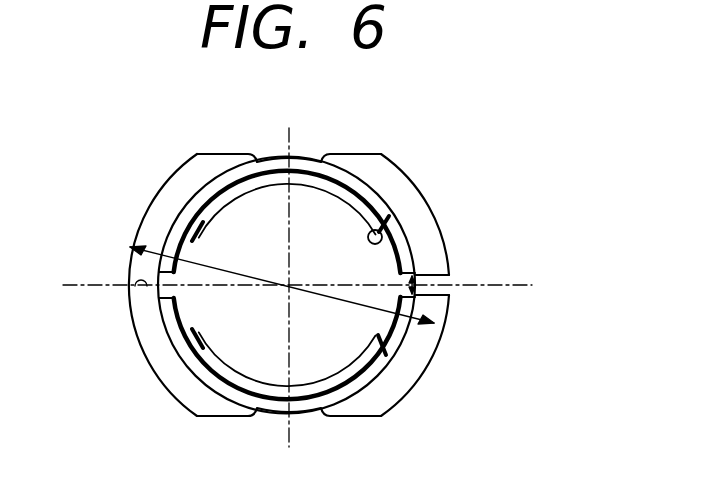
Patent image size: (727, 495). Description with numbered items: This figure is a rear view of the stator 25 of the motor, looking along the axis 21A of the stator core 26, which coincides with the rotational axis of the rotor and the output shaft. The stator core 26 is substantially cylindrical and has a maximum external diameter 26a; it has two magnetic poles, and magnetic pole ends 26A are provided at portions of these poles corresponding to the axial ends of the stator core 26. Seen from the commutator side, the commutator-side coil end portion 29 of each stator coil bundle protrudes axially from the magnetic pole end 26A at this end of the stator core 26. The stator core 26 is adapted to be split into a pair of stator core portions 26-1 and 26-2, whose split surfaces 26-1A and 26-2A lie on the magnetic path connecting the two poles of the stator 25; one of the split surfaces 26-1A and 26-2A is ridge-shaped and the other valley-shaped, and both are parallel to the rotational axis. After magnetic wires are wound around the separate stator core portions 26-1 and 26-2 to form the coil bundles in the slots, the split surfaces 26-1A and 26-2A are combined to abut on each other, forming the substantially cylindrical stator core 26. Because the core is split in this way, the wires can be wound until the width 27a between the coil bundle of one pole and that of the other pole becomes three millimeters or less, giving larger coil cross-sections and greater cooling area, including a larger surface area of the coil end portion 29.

The axis 21A is at (291, 289).
The stator 25 is at (443, 155).
The stator core 26 is at (133, 322).
The stator core portion 26-1 is at (425, 225).
The stator core portion 26-2 is at (447, 333).
The split surface 26-1A is at (442, 290).
The split surface 26-2A is at (440, 284).
The magnetic pole end 26A is at (389, 238).
The maximum external diameter 26a is at (353, 303).
The width 27a is at (422, 278).
The commutator-side coil end portion 29 is at (382, 178).